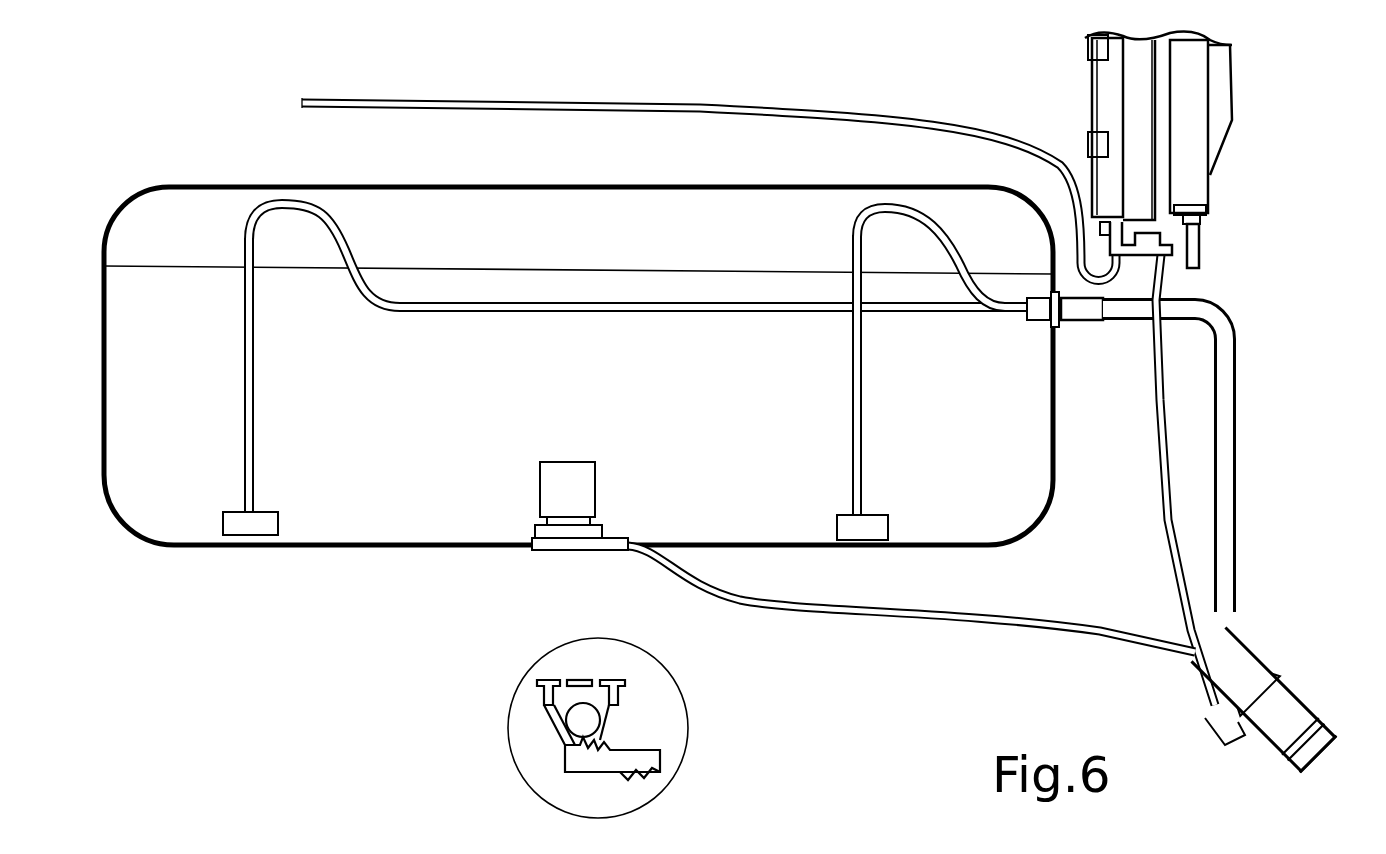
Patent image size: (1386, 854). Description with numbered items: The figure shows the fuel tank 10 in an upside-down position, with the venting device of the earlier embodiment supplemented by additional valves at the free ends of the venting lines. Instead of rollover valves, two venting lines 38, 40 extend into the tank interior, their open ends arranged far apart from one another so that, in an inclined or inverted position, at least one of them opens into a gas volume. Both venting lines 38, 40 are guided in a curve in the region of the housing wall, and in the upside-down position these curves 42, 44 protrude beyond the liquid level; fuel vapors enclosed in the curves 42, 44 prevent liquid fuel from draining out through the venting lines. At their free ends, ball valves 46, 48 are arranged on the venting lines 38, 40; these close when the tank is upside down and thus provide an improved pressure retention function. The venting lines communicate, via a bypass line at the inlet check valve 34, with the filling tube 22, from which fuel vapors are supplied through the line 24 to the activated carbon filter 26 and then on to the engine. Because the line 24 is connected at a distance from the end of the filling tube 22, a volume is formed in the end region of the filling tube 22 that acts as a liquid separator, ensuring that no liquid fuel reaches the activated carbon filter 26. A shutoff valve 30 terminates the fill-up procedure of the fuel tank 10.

The fuel tank 10 is at (145, 187).
The filling tube 22 is at (1256, 668).
The line 24 is at (1162, 288).
The activated carbon filter 26 is at (1232, 110).
The shutoff valve 30 is at (560, 540).
The inlet check valve 34 is at (1062, 310).
The venting line 38 is at (248, 396).
The venting line 40 is at (862, 425).
The curve 42 is at (283, 205).
The curve 44 is at (893, 208).
The ball valve 46 is at (520, 690).
The ball valve 48 is at (677, 682).